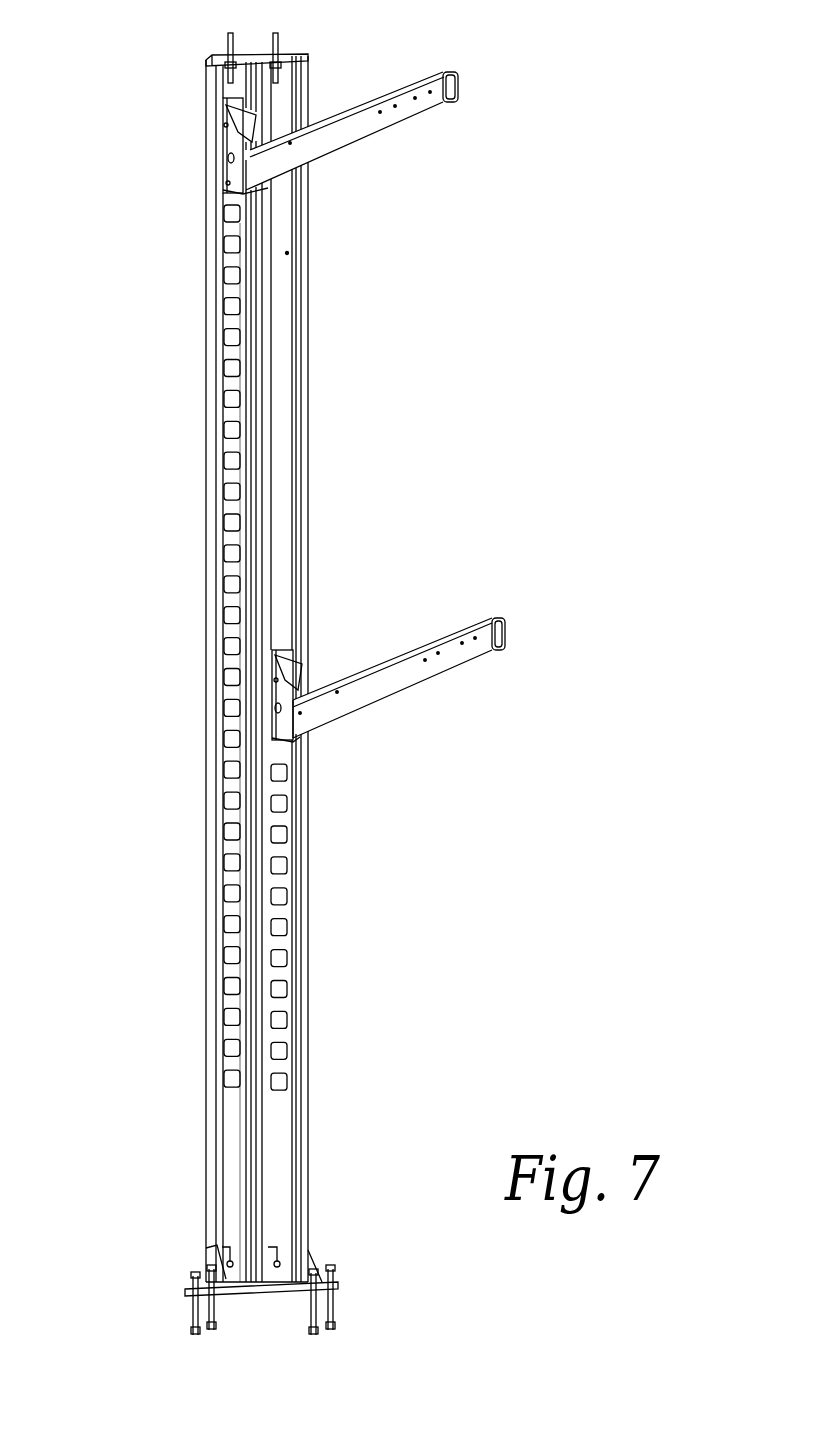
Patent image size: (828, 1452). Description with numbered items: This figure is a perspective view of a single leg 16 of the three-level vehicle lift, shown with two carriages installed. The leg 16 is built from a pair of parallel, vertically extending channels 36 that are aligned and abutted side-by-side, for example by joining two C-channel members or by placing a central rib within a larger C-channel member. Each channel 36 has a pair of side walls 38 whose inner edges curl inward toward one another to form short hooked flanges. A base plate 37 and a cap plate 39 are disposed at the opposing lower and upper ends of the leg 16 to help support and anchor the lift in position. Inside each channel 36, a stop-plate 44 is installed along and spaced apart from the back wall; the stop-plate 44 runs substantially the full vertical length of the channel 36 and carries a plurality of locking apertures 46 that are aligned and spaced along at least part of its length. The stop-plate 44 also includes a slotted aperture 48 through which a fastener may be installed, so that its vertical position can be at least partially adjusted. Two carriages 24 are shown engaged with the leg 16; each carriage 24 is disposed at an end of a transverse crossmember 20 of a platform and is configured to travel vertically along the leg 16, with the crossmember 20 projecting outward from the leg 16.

The leg 16 is at (308, 476).
The transverse crossmember 20 is at (432, 72).
The carriage 24 is at (225, 191).
The channel 36 is at (225, 352).
The base plate 37 is at (190, 1290).
The side wall 38 is at (270, 239).
The cap plate 39 is at (305, 58).
The stop-plate 44 is at (228, 598).
The locking aperture 46 is at (233, 297).
The slotted aperture 48 is at (223, 1251).